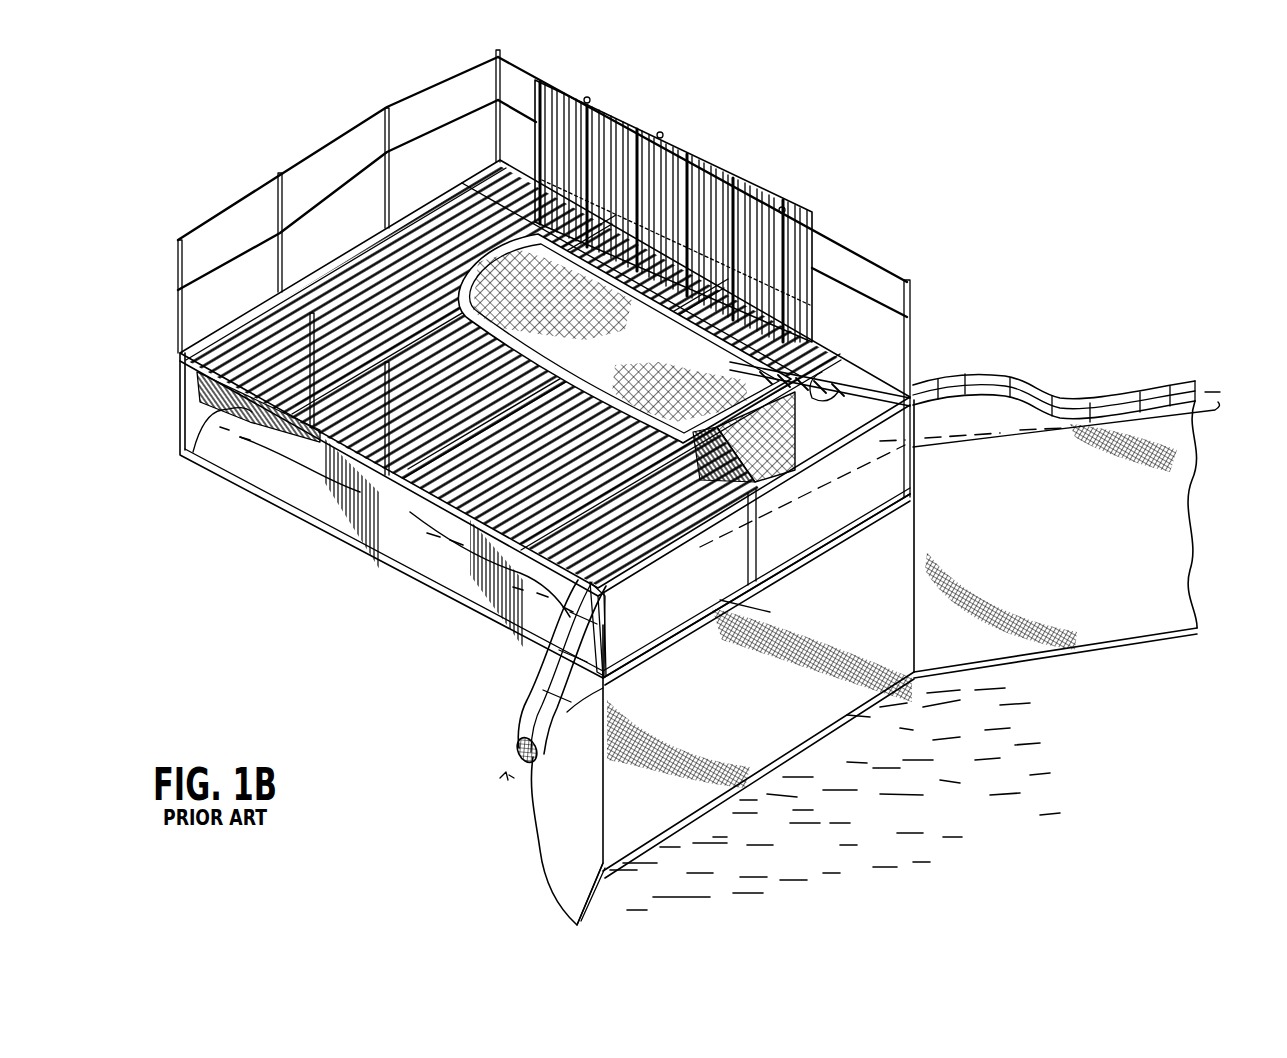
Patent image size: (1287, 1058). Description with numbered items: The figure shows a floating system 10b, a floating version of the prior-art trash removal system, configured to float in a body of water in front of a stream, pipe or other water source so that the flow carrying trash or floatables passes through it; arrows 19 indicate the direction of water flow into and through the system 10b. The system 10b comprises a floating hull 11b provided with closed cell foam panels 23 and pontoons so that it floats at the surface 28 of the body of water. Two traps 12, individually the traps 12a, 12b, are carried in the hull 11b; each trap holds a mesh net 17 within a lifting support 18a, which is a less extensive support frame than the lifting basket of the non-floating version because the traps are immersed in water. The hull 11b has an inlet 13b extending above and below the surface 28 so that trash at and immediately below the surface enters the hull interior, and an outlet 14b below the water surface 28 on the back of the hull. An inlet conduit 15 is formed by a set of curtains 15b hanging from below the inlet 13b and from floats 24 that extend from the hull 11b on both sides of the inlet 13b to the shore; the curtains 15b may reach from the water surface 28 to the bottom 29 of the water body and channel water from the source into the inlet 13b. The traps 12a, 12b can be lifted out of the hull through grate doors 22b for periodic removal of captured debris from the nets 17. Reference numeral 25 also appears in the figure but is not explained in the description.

The floating system 10b is at (190, 152).
The floating hull 11b is at (188, 383).
The frame 12 is at (804, 541).
The trap 12a is at (782, 490).
The trap 12b is at (620, 590).
The inlet 13b is at (782, 578).
The outlet 14b is at (325, 250).
The inlet conduit 15 is at (1195, 472).
The curtains 15b is at (1088, 553).
The mesh net 17 is at (682, 362).
The lifting support 18a is at (822, 376).
The arrows 19 is at (248, 258).
The grate doors 22b is at (808, 255).
The closed cell foam panels 23 is at (203, 465).
The floats 24 is at (1112, 396).
The flow direction 25 is at (420, 157).
The surface 28 is at (413, 532).
The bottom 29 is at (896, 826).